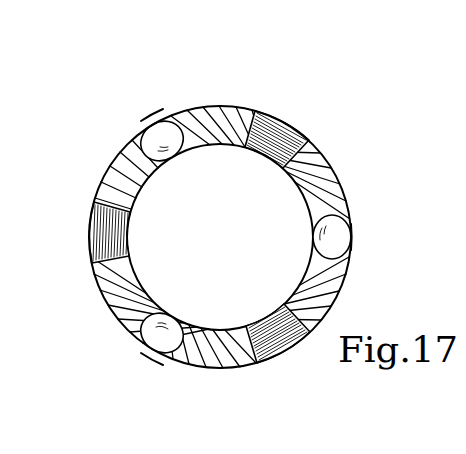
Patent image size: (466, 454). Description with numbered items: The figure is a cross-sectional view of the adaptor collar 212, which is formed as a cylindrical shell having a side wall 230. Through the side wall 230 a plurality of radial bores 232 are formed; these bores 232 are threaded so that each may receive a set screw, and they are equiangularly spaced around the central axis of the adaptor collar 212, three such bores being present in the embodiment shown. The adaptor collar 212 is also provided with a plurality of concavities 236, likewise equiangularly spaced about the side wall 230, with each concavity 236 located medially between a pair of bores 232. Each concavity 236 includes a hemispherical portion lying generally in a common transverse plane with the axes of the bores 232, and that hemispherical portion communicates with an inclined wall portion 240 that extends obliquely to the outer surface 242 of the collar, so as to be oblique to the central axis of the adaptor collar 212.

The adaptor collar 212 is at (253, 233).
The side wall 230 is at (332, 168).
The radial bores 232 is at (291, 112).
The concavities 236 is at (155, 108).
The inclined wall portion 240 is at (150, 134).
The outer surface 242 is at (110, 161).